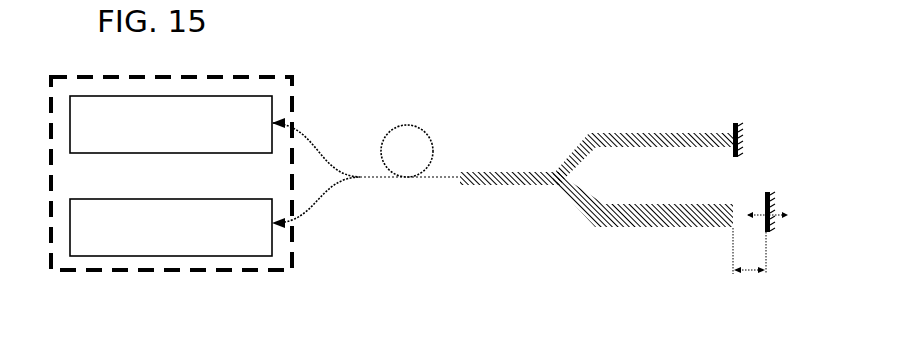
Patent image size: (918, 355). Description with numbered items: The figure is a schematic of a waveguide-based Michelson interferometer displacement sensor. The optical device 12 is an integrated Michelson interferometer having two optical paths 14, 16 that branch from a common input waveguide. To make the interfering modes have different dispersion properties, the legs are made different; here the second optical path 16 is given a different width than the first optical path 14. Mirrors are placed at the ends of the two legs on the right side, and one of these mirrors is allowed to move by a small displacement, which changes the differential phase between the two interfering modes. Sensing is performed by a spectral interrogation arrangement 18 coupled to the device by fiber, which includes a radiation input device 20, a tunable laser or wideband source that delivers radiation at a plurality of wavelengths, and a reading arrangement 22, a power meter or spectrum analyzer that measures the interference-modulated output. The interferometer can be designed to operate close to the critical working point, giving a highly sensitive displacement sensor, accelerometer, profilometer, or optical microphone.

The optical device 12 is at (625, 101).
The optical path 14 is at (632, 140).
The optical path 16 is at (632, 222).
The spectral interrogation arrangement 18 is at (240, 75).
The radiation input device 20 is at (277, 107).
The reading arrangement 22 is at (277, 245).